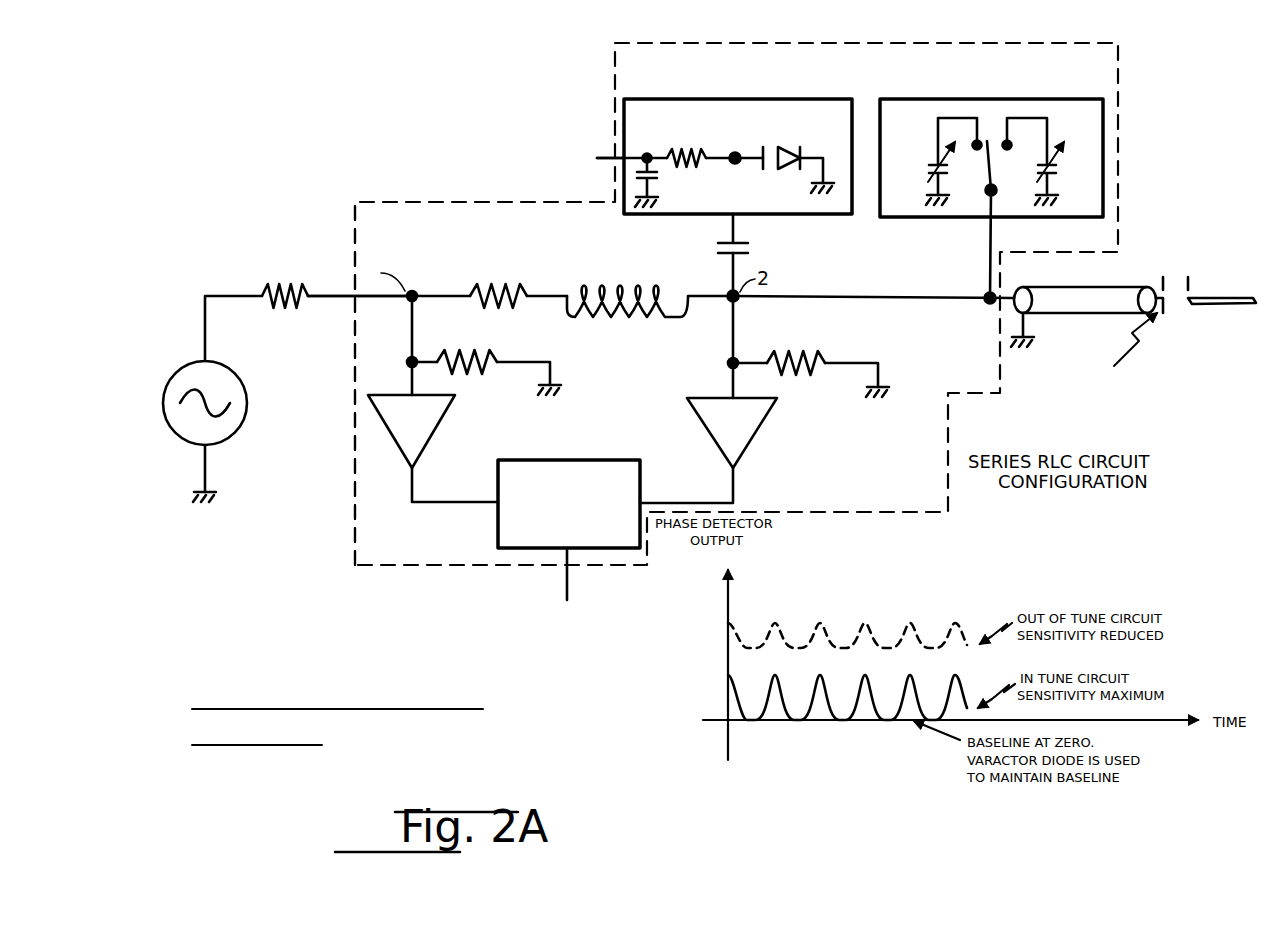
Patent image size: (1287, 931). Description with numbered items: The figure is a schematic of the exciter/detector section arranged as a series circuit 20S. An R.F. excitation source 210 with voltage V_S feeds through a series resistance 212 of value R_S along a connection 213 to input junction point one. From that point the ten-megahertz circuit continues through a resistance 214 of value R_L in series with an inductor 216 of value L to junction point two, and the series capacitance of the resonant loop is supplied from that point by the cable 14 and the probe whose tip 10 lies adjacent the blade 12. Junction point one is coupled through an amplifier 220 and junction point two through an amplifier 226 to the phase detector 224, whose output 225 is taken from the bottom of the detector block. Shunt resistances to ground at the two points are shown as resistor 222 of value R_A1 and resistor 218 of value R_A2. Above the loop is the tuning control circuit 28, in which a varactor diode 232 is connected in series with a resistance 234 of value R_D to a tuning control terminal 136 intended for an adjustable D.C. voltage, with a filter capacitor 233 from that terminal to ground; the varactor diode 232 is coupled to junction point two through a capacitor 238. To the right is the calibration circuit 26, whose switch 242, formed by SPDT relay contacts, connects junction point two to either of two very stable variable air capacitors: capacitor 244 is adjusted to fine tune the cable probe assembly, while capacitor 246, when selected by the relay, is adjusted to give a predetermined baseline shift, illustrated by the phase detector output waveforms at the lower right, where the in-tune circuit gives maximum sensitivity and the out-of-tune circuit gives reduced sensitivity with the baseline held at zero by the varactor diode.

The probe tip 10 is at (1168, 290).
The blade 12 is at (1228, 295).
The cable 14 is at (1105, 287).
The calibration circuit 26 is at (879, 108).
The tuning control circuit 28 is at (700, 99).
The tuning control terminal 136 is at (600, 155).
The R.F. excitation source 210 is at (178, 368).
The resistance 212 is at (262, 284).
The connection line 213 is at (330, 297).
The resistance 214 is at (477, 285).
The inductor 216 is at (586, 285).
The resistor 218 is at (818, 357).
The amplifier 220 is at (433, 435).
The resistor 222 is at (492, 354).
The phase detector 224 is at (576, 460).
The phase detector output 225 is at (566, 585).
The amplifier 226 is at (760, 430).
The varactor diode 232 is at (772, 150).
The filter capacitor 233 is at (658, 178).
The resistance 234 is at (700, 153).
The capacitor 238 is at (750, 247).
The switch 242 is at (997, 165).
The capacitor 244 is at (928, 172).
The capacitor 246 is at (1057, 168).
The series circuit 20S is at (348, 530).